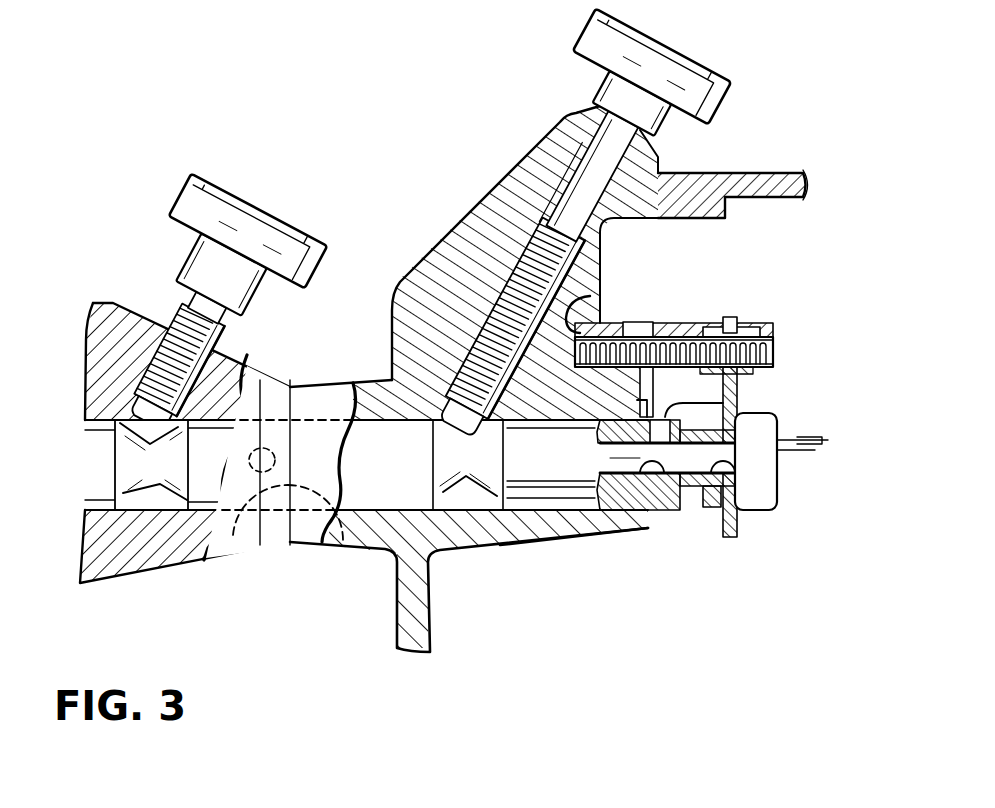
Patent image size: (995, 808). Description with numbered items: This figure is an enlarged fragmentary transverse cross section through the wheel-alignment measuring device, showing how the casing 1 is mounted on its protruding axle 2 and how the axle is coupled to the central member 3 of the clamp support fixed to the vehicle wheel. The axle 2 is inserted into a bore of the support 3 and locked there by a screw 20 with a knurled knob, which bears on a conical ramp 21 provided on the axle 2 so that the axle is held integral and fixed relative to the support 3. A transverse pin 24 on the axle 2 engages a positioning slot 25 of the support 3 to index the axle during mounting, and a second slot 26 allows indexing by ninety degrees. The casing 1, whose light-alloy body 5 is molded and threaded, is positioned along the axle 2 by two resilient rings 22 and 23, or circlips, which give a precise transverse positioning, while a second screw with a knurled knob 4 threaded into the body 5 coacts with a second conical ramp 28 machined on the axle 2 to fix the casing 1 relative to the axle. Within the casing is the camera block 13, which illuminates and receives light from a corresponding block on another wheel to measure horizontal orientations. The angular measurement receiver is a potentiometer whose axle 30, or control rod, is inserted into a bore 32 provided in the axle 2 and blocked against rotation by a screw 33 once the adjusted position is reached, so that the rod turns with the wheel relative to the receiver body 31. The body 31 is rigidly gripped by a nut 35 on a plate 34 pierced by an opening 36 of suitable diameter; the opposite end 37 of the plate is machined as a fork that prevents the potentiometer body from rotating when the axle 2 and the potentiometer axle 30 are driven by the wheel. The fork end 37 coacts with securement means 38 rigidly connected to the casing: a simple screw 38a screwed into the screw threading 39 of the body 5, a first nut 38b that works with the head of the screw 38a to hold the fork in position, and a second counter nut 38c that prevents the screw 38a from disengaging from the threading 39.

The casing 1 is at (780, 138).
The protruding axle 2 is at (374, 447).
The central member of support 3 is at (112, 288).
The locking screw 4 is at (688, 50).
The body of the casing 5 is at (500, 211).
The camera block 13 is at (800, 486).
The screw with knurled knob 20 is at (247, 204).
The conical ramp 21 is at (128, 490).
The resilient ring 22 is at (288, 548).
The resilient ring 23 is at (641, 531).
The transverse axle 24 is at (233, 535).
The positioning slot 25 is at (343, 540).
The slot 26 is at (268, 372).
The second conical ramp 28 is at (452, 488).
The axle of the receiver 30 is at (612, 457).
The body of the receiver 31 is at (766, 426).
The bore 32 is at (660, 508).
The screw 33 is at (668, 410).
The plate 34 is at (730, 540).
The nut 35 is at (710, 508).
The opening 36 is at (728, 470).
The fork-shaped end 37 is at (744, 318).
The securement means 38 is at (673, 328).
The screw 38a is at (760, 330).
The first nut 38b is at (704, 328).
The second counter nut 38c is at (650, 328).
The screw threading 39 is at (584, 294).